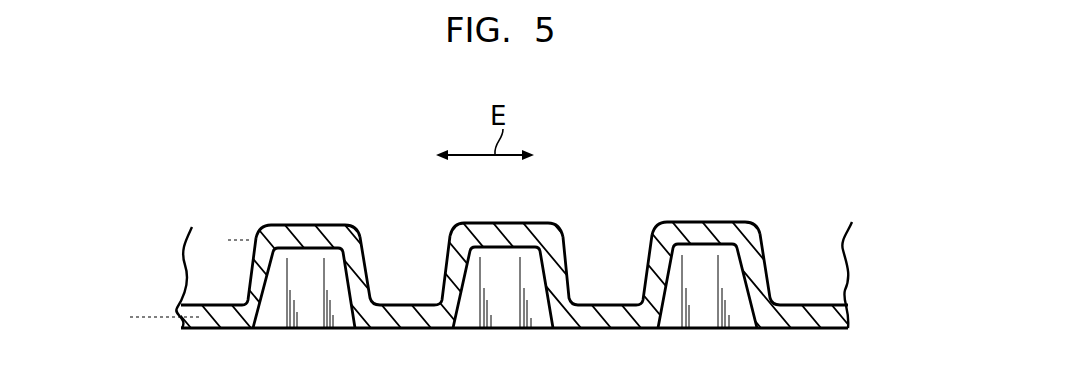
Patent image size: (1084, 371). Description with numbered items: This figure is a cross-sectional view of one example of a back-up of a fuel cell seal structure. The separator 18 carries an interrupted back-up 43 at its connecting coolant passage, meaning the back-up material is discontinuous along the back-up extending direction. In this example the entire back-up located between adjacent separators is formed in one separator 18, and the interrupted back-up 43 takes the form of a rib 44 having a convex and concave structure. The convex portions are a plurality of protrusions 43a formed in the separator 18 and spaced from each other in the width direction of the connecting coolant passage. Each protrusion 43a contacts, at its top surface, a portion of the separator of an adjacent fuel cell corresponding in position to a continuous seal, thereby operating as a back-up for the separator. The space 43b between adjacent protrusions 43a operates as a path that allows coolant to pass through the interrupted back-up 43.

The separator 18 is at (818, 303).
The interrupted back-up 43 is at (440, 284).
The protrusion 43a is at (284, 222).
The space 43b is at (403, 290).
The rib 44 is at (148, 227).